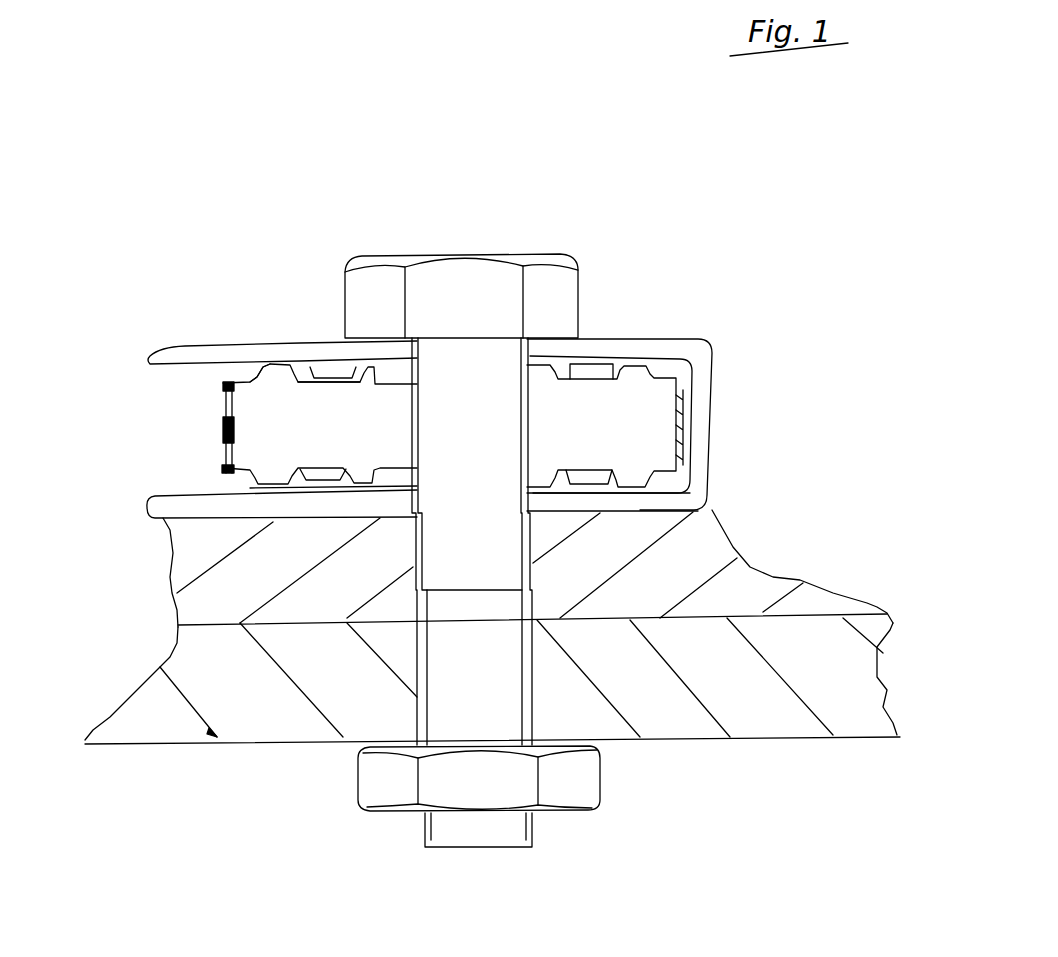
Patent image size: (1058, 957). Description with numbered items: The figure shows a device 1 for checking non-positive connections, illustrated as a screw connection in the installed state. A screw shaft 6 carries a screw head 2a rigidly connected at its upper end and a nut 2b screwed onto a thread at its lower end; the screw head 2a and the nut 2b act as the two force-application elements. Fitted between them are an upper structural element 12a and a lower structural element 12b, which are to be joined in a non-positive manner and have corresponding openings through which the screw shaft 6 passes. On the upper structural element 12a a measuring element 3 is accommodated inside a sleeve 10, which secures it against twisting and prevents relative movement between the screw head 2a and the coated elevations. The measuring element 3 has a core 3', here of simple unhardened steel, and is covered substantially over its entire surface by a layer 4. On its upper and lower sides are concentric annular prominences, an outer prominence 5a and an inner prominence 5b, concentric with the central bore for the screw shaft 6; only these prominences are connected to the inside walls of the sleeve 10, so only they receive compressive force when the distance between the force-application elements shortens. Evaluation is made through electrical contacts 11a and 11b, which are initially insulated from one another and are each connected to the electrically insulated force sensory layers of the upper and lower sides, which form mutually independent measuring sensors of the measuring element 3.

The device 1 is at (135, 292).
The screw head 2a is at (442, 265).
The nut 2b is at (578, 780).
The measuring element 3 is at (679, 382).
The core 3' is at (449, 359).
The layer 4 is at (193, 353).
The annular prominence (outside) 5a is at (273, 362).
The annular prominence (inside) 5b is at (355, 356).
The screw shaft 6 is at (452, 625).
The sleeve 10 is at (707, 400).
The electrical contact 11a is at (222, 388).
The electrical contact 11b is at (223, 473).
The upper structural element 12a is at (737, 572).
The lower structural element 12b is at (757, 717).